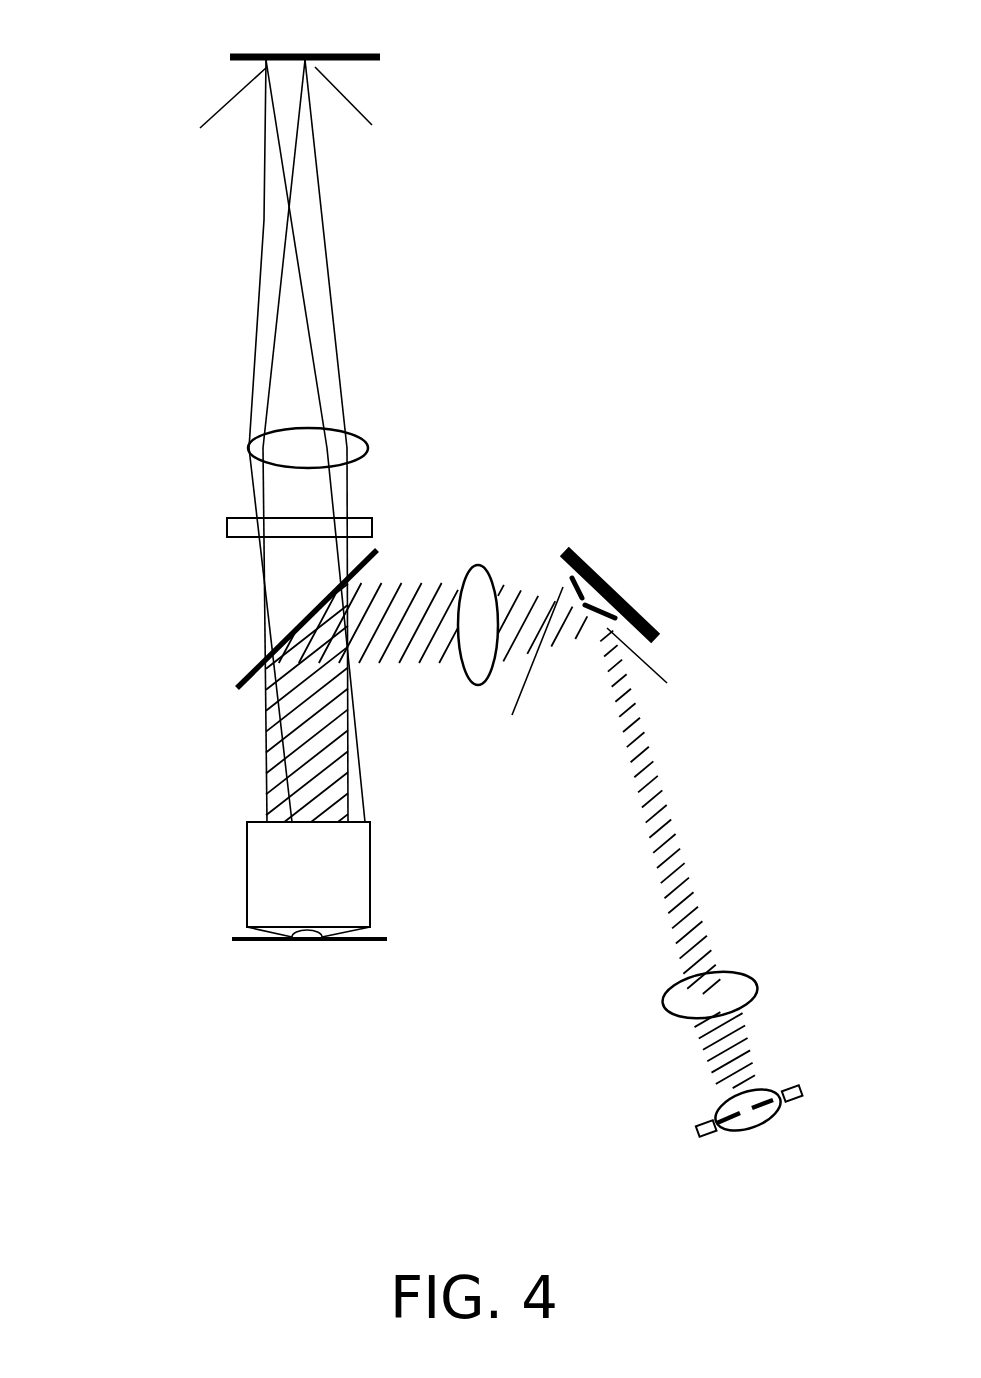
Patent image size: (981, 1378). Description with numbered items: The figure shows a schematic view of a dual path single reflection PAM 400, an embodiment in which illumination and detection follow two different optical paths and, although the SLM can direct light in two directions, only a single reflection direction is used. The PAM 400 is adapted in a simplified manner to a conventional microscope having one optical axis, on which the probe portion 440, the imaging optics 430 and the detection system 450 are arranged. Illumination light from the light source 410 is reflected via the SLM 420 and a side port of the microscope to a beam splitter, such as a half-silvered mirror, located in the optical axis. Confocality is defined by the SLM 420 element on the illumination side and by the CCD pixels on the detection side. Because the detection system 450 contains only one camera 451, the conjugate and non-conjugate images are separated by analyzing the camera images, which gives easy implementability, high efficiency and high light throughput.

The dual path single reflection PAM 400 is at (83, 428).
The light source 410 is at (779, 1141).
The SLM 420 is at (605, 647).
The imaging optics 430 is at (382, 443).
The probe portion 440 is at (487, 940).
The detection system 450 is at (483, 543).
The camera 451 is at (305, 34).